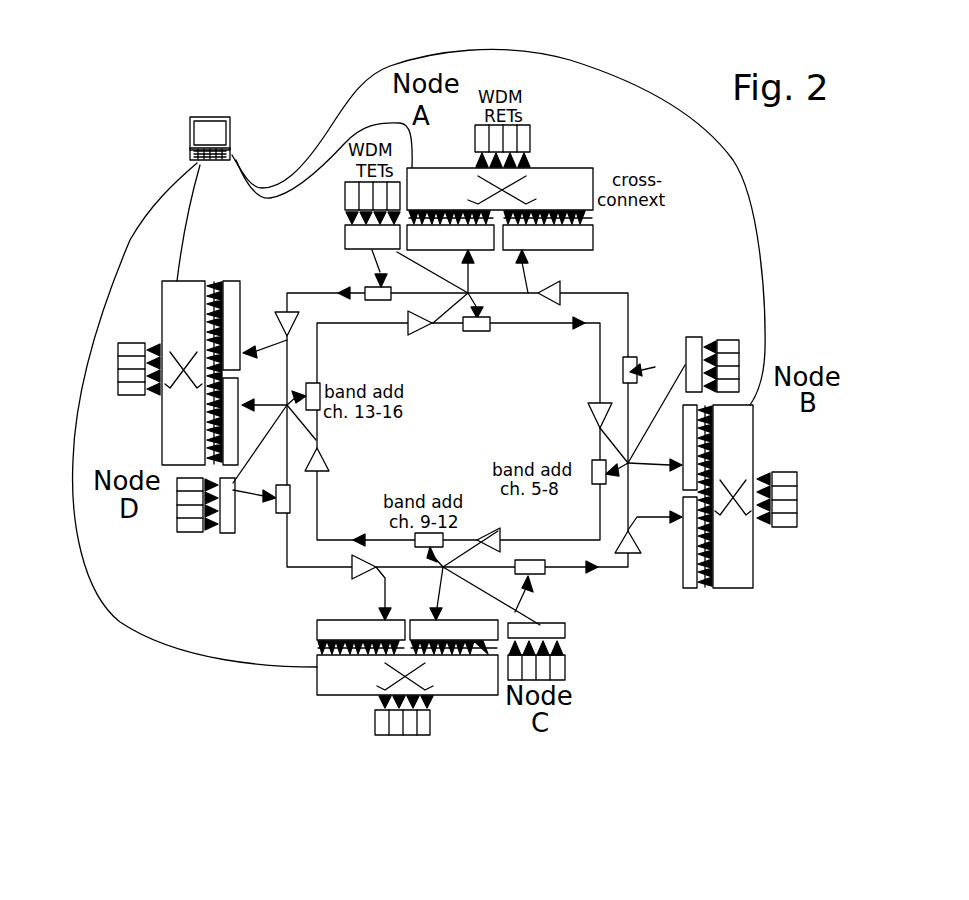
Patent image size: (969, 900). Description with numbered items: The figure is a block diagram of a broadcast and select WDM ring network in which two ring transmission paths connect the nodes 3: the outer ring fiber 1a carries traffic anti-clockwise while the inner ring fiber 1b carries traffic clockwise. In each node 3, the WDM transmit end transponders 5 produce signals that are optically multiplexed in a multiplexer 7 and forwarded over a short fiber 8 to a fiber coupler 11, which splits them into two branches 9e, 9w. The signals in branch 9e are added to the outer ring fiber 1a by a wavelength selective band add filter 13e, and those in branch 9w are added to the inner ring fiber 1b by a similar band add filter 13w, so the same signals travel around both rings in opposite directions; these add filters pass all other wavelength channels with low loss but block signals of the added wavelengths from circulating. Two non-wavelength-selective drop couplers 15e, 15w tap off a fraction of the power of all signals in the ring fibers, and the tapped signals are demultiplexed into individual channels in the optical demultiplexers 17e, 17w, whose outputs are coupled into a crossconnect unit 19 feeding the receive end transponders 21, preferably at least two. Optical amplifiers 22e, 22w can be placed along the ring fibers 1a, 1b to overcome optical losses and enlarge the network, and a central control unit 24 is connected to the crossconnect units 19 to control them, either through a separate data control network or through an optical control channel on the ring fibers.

The node 3 is at (605, 57).
The central control unit 24 is at (190, 144).
The WDM transmit end transponders (TETs) 5 is at (345, 193).
The multiplexer 7 is at (345, 241).
The receive end transponders (RETs) 21 is at (530, 138).
The crossconnect unit 19 is at (580, 168).
The optical demultiplexer 17e is at (460, 259).
The optical demultiplexer 17w is at (593, 238).
The outer ring fiber 1a is at (628, 300).
The inner ring fiber 1b is at (600, 362).
The fiber coupler 11 is at (396, 275).
The short fiber 8 is at (362, 290).
The band add filter 13e is at (381, 291).
The band add filter 13w is at (477, 332).
The branch 9e is at (394, 262).
The branch 9w is at (410, 262).
The optical amplifier 22e is at (408, 322).
The optical amplifier 22w is at (562, 290).
The drop coupler 15e is at (432, 327).
The drop coupler 15w is at (532, 293).